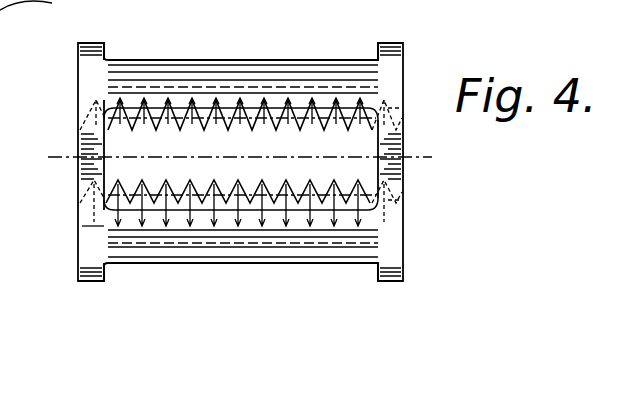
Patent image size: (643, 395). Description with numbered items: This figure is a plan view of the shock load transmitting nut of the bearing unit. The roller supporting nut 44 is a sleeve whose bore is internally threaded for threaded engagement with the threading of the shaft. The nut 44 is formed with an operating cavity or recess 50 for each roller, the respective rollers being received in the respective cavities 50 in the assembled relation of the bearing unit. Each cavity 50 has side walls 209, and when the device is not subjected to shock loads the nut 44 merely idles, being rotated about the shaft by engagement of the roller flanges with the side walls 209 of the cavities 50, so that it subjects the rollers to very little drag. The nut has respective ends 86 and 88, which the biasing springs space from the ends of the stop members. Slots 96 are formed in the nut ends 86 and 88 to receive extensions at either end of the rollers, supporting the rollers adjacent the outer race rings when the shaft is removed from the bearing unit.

The roller supporting nut 44 is at (407, 63).
The operating cavity 50 is at (135, 146).
The side walls 209 is at (223, 98).
The nut end 86 is at (405, 204).
The slots 96 is at (405, 146).
The nut end 88 is at (82, 210).